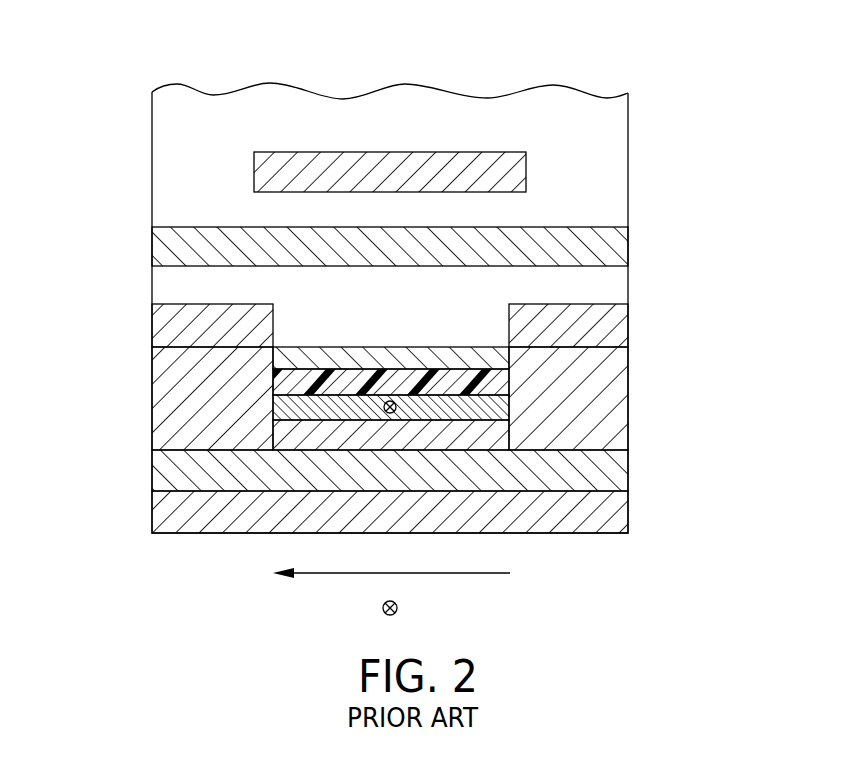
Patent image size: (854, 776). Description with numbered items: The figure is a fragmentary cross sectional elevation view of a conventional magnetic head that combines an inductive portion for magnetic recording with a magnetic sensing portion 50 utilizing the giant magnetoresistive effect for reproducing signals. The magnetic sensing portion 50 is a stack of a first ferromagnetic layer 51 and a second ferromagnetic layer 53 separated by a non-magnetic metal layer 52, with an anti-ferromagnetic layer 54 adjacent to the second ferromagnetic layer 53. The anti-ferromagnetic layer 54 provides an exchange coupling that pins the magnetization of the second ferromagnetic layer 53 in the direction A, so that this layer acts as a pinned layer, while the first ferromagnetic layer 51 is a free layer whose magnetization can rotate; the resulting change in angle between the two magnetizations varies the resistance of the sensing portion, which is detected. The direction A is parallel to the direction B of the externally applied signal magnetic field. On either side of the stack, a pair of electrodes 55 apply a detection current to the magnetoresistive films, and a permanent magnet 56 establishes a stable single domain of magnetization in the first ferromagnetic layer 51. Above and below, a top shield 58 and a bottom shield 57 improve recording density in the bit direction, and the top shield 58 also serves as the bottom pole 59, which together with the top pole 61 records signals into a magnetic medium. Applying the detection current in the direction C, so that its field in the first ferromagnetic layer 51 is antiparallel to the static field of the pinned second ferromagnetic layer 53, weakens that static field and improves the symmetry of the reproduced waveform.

The magnetic sensing portion 50 is at (391, 343).
The first ferromagnetic layer 51 is at (310, 362).
The non-magnetic metal layer 52 is at (345, 378).
The second ferromagnetic layer 53 is at (447, 398).
The anti-ferromagnetic layer 54 is at (297, 442).
The electrodes 55 is at (160, 328).
The permanent magnet 56 is at (160, 412).
The bottom shield 57 is at (620, 518).
The top shield 58 is at (467, 246).
The bottom pole 59 is at (620, 242).
The top pole 61 is at (455, 158).
The direction A is at (393, 356).
The direction B is at (381, 607).
The direction C is at (484, 575).